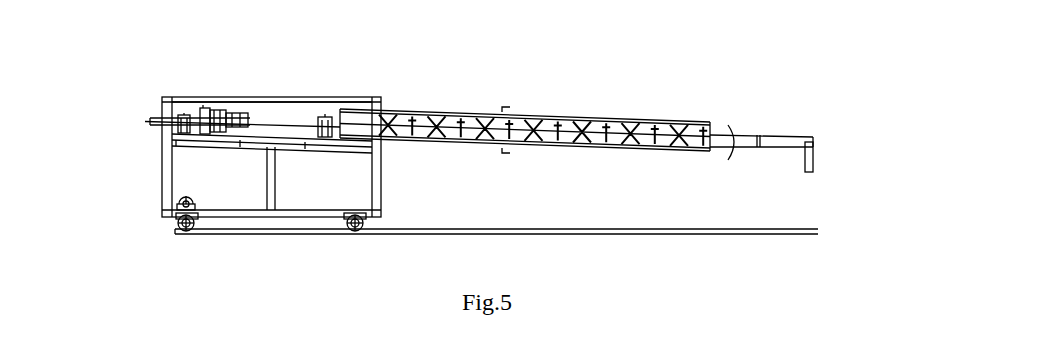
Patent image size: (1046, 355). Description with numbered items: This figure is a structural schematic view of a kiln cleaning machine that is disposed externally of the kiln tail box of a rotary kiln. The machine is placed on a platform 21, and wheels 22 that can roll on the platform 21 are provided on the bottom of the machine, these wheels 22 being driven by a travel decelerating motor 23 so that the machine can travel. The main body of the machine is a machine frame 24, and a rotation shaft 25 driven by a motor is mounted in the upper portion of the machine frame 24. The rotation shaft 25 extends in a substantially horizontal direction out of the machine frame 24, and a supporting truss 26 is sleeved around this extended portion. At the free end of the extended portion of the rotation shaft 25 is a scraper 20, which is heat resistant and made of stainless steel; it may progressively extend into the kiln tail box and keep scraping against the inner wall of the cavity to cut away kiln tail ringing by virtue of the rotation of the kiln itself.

The scraper 20 is at (813, 148).
The platform 21 is at (197, 232).
The wheels 22 is at (186, 223).
The travel decelerating motor 23 is at (185, 207).
The machine frame 24 is at (165, 163).
The rotation shaft 25 is at (285, 120).
The supporting truss 26 is at (383, 212).